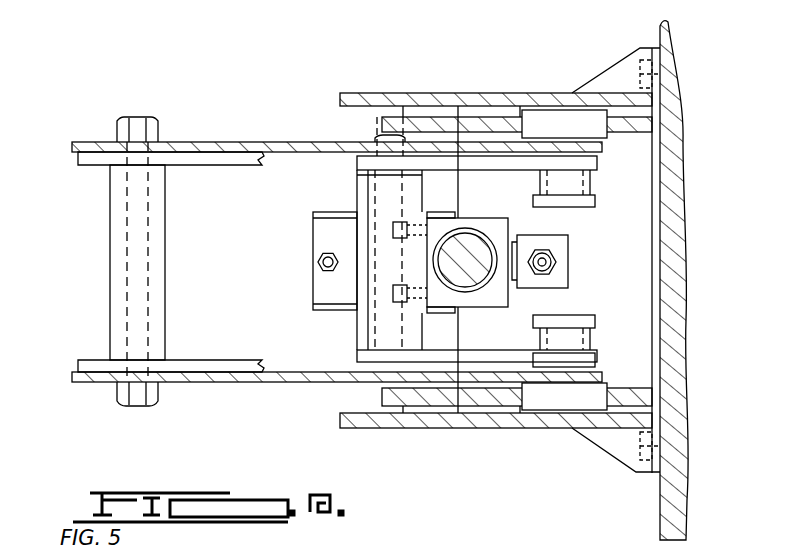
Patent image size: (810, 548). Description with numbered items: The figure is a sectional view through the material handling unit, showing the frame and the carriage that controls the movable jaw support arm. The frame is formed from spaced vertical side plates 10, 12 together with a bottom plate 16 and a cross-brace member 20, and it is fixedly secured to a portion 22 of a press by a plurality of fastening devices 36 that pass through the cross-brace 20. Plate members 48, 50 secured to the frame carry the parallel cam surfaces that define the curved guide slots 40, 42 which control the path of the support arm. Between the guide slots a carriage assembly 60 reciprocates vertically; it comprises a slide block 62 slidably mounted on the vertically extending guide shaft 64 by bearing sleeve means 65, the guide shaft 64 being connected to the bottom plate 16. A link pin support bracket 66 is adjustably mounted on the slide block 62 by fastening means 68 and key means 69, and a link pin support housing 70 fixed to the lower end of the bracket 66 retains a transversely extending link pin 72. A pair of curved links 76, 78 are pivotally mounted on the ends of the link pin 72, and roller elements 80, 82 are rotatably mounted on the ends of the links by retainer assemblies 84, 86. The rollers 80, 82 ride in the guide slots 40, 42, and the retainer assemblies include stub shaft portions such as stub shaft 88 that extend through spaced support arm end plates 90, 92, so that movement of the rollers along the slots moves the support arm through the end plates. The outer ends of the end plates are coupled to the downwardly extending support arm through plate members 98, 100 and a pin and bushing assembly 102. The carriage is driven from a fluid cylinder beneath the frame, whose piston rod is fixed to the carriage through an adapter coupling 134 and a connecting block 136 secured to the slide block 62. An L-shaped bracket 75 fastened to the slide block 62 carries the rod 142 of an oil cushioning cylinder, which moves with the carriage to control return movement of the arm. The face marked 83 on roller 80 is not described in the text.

The vertical side plate 10 is at (345, 423).
The vertical side plate 12 is at (355, 92).
The bottom plate 16 is at (475, 338).
The cross-brace member 20 is at (652, 268).
The press portion 22 is at (682, 212).
The fastening device 36 is at (618, 478).
The guide slot 40 is at (600, 120).
The guide slot 42 is at (600, 372).
The plate member 48 is at (483, 407).
The plate member 50 is at (690, 372).
The carriage assembly 60 is at (352, 205).
The slide block 62 is at (500, 232).
The guide shaft 64 is at (467, 237).
The bearing sleeve means 65 is at (480, 306).
The link pin support bracket 66 is at (398, 268).
The fastening means 68 is at (395, 295).
The key means 69 is at (430, 262).
The link pin support housing 70 is at (425, 197).
The link pin 72 is at (378, 140).
The L-shaped bracket 75 is at (327, 236).
The curved link 76 is at (477, 163).
The curved link 78 is at (365, 373).
The roller element 80 is at (540, 125).
The roller element 82 is at (545, 405).
The upper slide block face 83 is at (563, 124).
The retainer assembly 84 is at (598, 190).
The retainer assembly 86 is at (590, 330).
The stub shaft portion 88 is at (575, 397).
The support arm end plate 90 is at (250, 140).
The support arm end plate 92 is at (262, 384).
The plate member 98 is at (195, 165).
The plate member 100 is at (92, 360).
The pin and bushing assembly 102 is at (166, 258).
The adapter coupling 134 is at (570, 260).
The connecting block 136 is at (560, 246).
The rod 142 is at (320, 264).